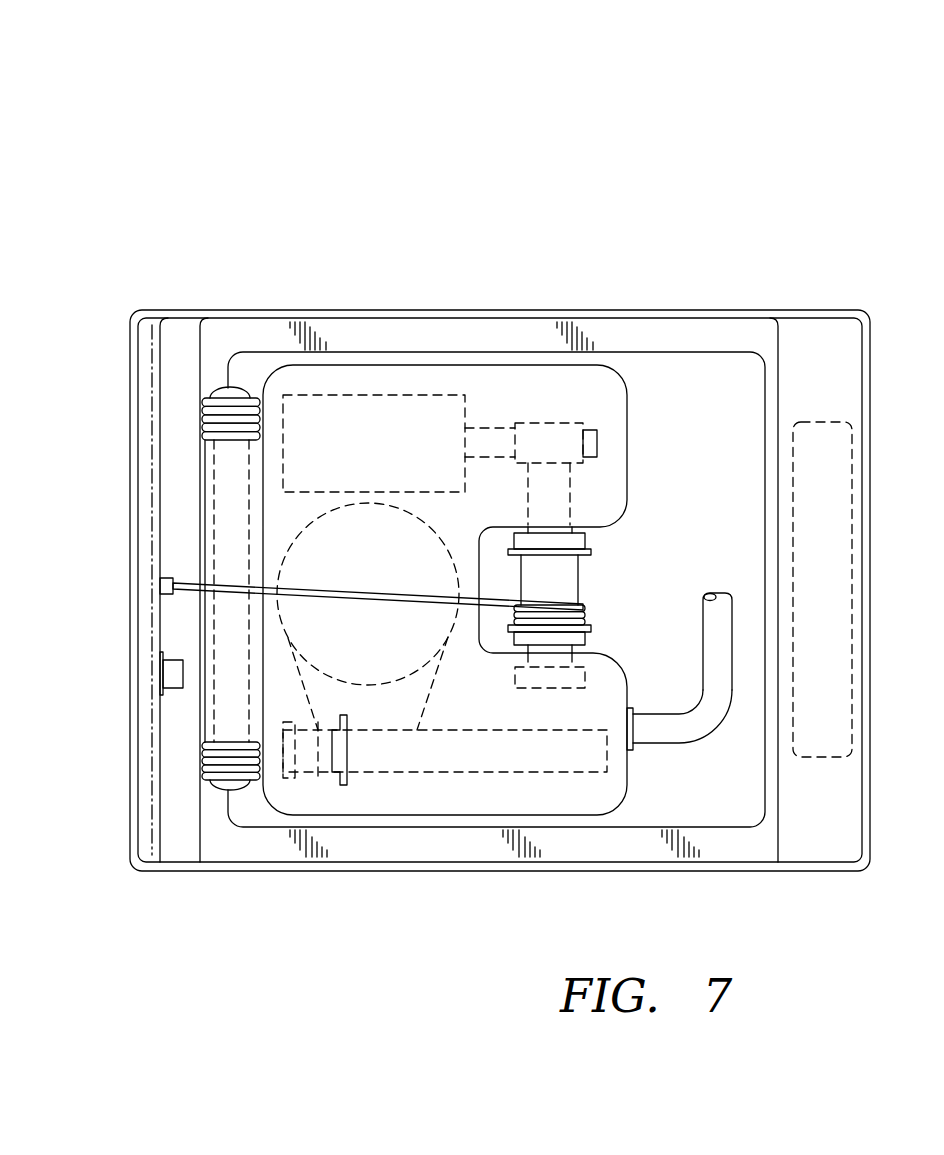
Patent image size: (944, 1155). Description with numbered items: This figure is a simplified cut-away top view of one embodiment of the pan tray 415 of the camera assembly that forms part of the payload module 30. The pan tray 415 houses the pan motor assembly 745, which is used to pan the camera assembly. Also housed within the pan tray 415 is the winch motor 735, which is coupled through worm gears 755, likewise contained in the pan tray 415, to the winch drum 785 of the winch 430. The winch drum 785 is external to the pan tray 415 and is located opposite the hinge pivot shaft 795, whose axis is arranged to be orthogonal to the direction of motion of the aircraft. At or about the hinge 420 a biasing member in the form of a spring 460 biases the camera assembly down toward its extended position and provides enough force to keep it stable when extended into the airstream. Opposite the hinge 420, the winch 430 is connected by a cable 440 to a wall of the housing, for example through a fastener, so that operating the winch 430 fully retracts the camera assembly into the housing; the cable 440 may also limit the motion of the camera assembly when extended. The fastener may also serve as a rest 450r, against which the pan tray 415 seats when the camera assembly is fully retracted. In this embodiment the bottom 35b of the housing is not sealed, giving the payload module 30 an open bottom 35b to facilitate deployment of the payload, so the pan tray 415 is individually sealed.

The payload module 30 is at (243, 258).
The winch motor 735 is at (377, 395).
The pan tray 415 is at (500, 366).
The bottom of the housing 35b is at (708, 355).
The hinge 420 is at (226, 388).
The spring 460 is at (206, 428).
The worm gears 755 is at (568, 423).
The hinge pivot shaft 795 is at (216, 506).
The winch 430 is at (605, 545).
The cable 440 is at (190, 583).
The winch drum 785 is at (563, 592).
The rest 450r is at (175, 668).
The pan motor assembly 745 is at (377, 772).